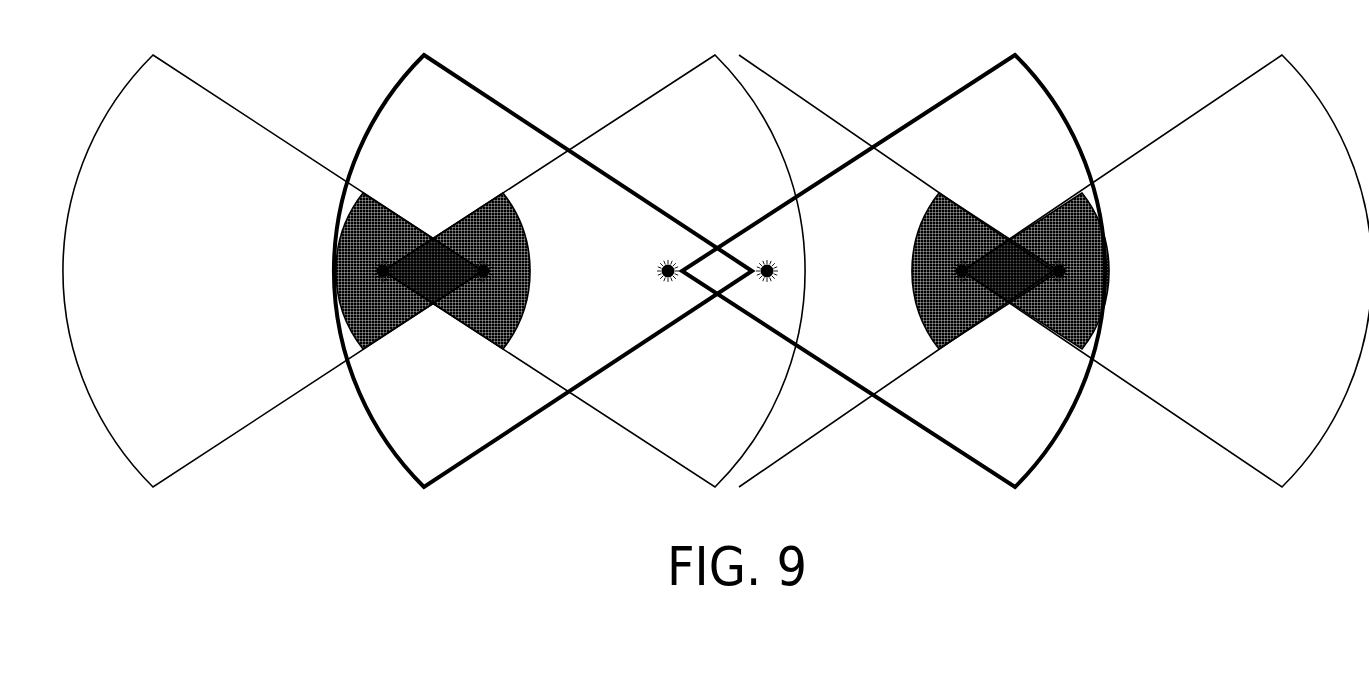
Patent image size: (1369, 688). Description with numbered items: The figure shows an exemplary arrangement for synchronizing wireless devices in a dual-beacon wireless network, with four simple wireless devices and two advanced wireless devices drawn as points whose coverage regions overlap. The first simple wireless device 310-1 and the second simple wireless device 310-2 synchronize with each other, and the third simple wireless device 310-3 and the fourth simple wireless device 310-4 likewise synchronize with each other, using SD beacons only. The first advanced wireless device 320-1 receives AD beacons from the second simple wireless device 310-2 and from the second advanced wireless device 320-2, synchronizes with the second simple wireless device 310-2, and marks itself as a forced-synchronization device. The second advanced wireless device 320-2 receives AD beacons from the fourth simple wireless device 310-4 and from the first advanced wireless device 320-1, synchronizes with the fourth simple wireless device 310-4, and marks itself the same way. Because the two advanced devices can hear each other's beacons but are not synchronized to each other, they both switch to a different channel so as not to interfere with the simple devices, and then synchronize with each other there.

The first simple wireless device 310-1 is at (482, 264).
The second simple wireless device 310-2 is at (384, 277).
The third simple wireless device 310-3 is at (963, 278).
The fourth simple wireless device 310-4 is at (1058, 262).
The first advanced wireless device 320-1 is at (775, 271).
The second advanced wireless device 320-2 is at (660, 271).